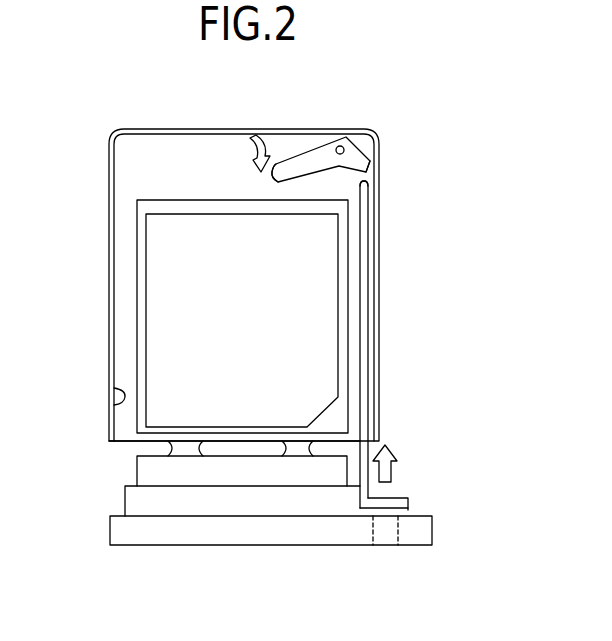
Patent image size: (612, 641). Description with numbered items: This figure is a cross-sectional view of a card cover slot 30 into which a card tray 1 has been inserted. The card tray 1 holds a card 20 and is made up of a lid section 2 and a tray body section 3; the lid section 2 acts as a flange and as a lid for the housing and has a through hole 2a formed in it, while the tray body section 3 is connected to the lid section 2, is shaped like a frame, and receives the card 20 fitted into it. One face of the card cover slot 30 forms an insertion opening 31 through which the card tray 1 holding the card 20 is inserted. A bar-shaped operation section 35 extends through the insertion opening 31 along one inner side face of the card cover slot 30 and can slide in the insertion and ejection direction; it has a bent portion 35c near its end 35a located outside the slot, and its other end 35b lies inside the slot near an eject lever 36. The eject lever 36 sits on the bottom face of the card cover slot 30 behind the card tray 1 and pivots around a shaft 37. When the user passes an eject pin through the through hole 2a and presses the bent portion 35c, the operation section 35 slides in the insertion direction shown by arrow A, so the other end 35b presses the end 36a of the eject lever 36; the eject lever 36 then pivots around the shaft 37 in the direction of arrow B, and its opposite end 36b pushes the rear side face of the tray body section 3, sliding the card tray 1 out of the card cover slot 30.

The card tray 1 is at (131, 573).
The lid section 2 is at (122, 496).
The through hole 2a is at (373, 530).
The tray body section 3 is at (134, 252).
The card 20 is at (200, 322).
The card cover slot 30 is at (109, 160).
The insertion opening 31 is at (110, 394).
The operation section 35 is at (364, 302).
The end 35a is at (412, 511).
The other end 35b is at (357, 184).
The bent portion 35c is at (390, 498).
The eject lever 36 is at (300, 154).
The end 36a is at (364, 174).
The end 36b is at (272, 181).
The shaft 37 is at (342, 145).
The arrow A is at (397, 466).
The arrow B is at (252, 135).